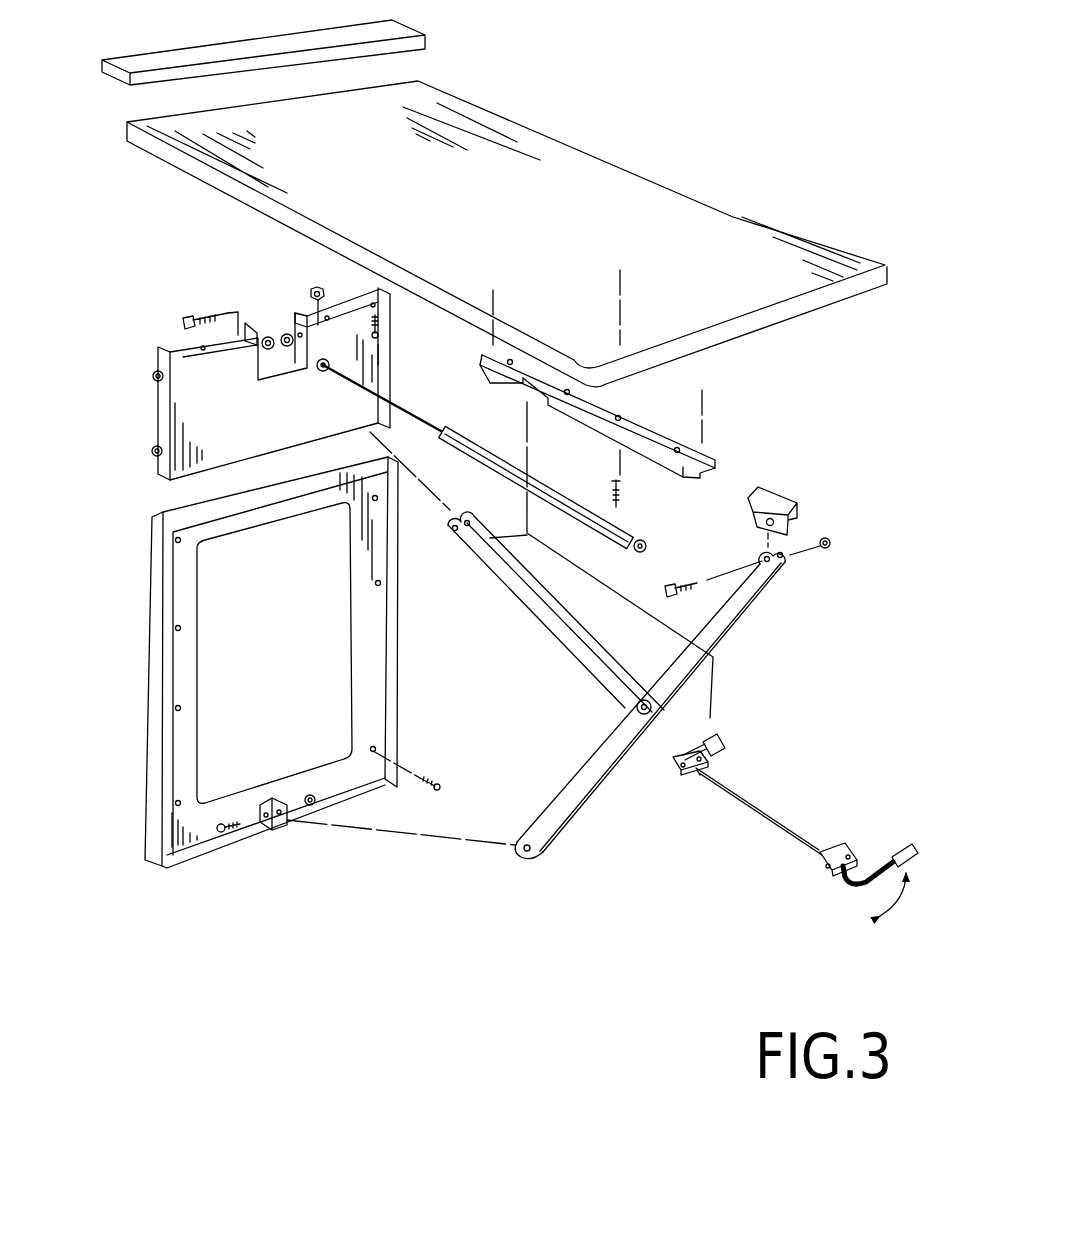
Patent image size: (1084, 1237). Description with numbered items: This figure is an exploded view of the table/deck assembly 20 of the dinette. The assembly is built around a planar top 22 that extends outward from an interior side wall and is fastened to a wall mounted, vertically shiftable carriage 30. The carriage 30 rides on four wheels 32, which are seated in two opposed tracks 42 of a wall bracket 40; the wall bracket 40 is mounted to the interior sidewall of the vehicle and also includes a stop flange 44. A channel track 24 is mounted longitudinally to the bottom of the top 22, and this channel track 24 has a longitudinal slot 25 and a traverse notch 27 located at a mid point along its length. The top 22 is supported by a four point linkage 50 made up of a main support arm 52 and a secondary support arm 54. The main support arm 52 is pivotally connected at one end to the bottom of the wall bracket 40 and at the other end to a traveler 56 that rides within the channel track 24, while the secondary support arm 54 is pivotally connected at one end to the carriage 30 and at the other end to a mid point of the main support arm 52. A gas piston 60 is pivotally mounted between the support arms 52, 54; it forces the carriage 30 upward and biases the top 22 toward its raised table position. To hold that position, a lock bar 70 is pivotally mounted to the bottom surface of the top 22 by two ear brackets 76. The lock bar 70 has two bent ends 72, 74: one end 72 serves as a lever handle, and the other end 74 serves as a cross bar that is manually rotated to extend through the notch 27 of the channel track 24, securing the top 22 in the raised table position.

The table/deck assembly 20 is at (700, 156).
The planar top 22 is at (715, 230).
The channel track 24 is at (640, 430).
The longitudinal slot 25 is at (702, 477).
The traverse notch 27 is at (533, 393).
The carriage 30 is at (148, 415).
The wheels 32 is at (156, 372).
The wall bracket 40 is at (206, 692).
The tracks 42 is at (155, 700).
The stop flange 44 is at (253, 50).
The four point linkage 50 is at (758, 627).
The main support arm 52 is at (572, 815).
The secondary support arm 54 is at (505, 578).
The traveler 56 is at (770, 495).
The gas piston 60 is at (505, 483).
The lock bar 70 is at (766, 800).
The bent end (lever handle) 72 is at (872, 862).
The bent end (cross bar) 74 is at (693, 737).
The ear brackets 76 is at (707, 752).